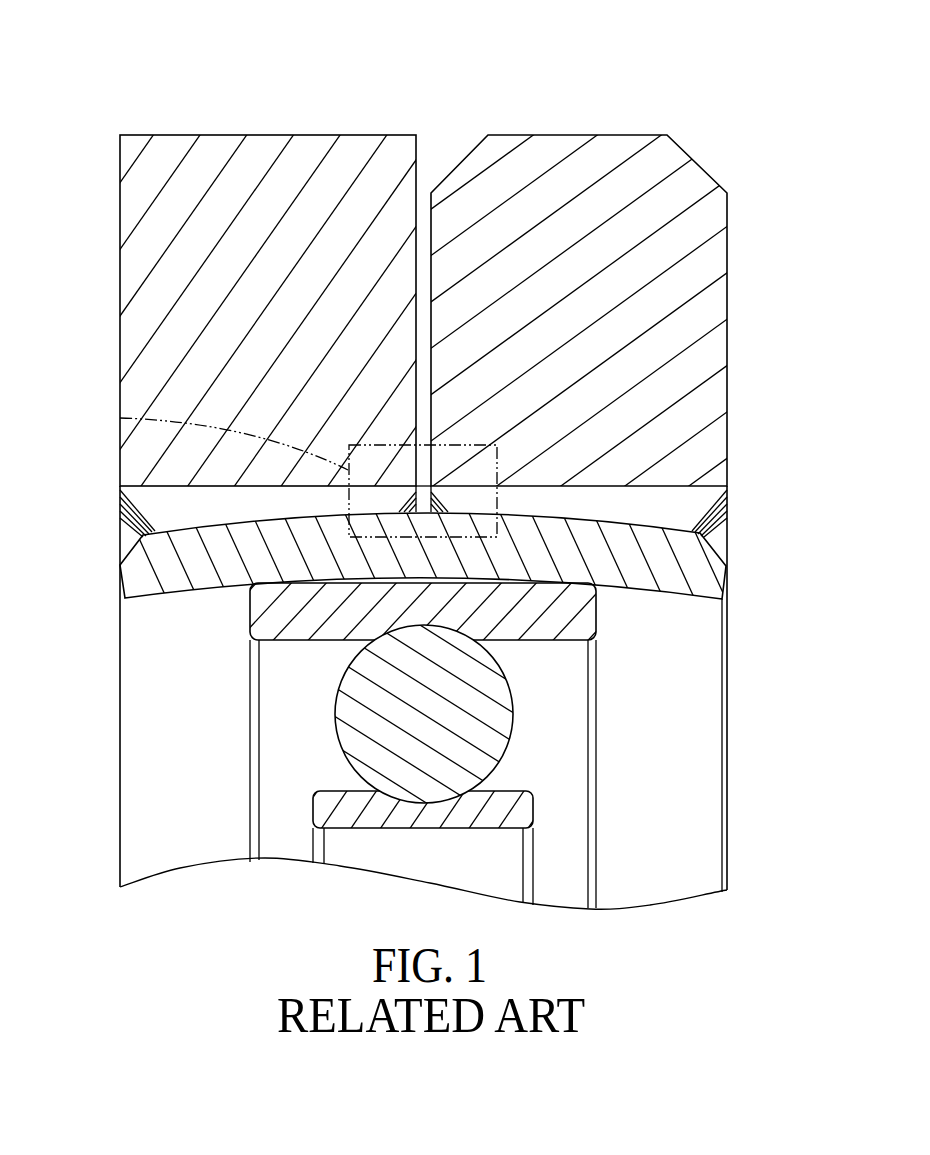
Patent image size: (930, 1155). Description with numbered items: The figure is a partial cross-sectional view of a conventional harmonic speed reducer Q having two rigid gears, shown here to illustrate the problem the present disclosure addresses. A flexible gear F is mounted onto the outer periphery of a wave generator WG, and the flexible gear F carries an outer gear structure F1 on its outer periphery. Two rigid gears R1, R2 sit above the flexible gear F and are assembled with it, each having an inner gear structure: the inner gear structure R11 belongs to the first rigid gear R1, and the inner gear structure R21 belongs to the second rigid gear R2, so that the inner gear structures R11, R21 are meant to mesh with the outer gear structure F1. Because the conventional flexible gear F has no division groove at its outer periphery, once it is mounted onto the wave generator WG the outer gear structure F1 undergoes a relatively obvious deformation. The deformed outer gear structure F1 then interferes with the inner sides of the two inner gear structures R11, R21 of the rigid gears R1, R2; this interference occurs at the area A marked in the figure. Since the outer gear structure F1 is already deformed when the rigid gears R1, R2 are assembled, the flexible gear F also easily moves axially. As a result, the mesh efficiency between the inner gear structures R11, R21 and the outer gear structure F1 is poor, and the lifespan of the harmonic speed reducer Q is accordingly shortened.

The conventional harmonic speed reducer Q is at (137, 63).
The rigid gear R1 is at (118, 281).
The rigid gear R2 is at (727, 299).
The inner gear structure R11 is at (168, 501).
The inner gear structure R21 is at (678, 503).
The outer gear structure F1 is at (667, 574).
The flexible gear F is at (726, 633).
The wave generator WG is at (600, 770).
The area A is at (120, 419).